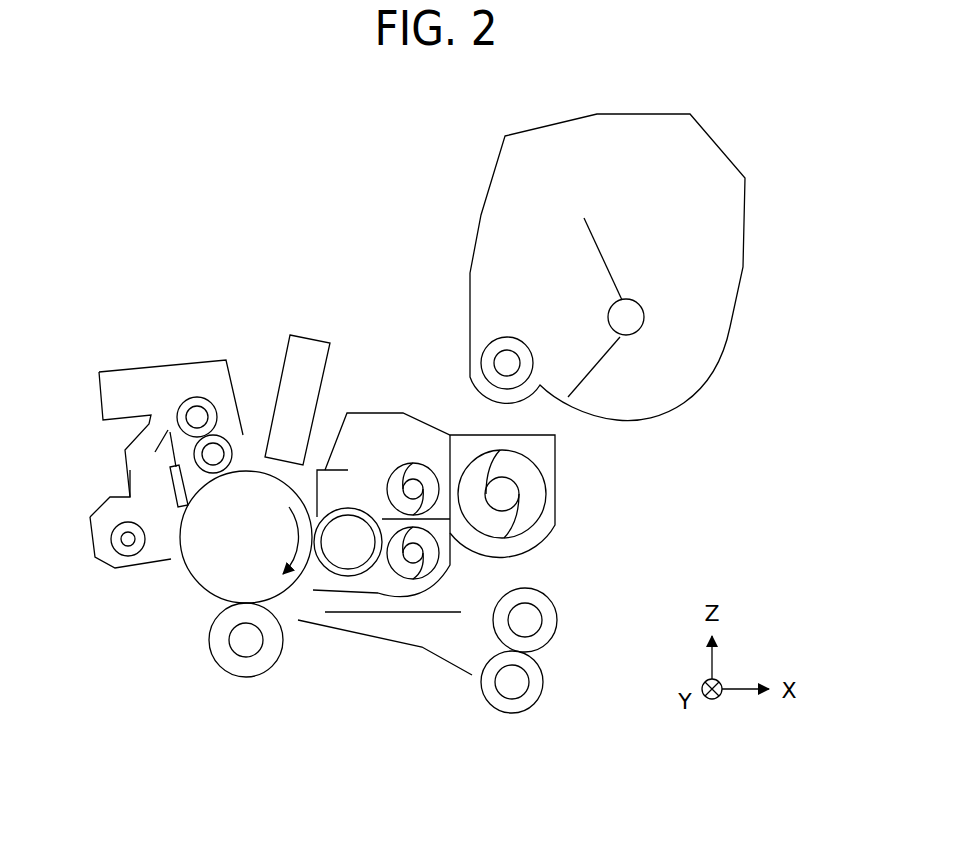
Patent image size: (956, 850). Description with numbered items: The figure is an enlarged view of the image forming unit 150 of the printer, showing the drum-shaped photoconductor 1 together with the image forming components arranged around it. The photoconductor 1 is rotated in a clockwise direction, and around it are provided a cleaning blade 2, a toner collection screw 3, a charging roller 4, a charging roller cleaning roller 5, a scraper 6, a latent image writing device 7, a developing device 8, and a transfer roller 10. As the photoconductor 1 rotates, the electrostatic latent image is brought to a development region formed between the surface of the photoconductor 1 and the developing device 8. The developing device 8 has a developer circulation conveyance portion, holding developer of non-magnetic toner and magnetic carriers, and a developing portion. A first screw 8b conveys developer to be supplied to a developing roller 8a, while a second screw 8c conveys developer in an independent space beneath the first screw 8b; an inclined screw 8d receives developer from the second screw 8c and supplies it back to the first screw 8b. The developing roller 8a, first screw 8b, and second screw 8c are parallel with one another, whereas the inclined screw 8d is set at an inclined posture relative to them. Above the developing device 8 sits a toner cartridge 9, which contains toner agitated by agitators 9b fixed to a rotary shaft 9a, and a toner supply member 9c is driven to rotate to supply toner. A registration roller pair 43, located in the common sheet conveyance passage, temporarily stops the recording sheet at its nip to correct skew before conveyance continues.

The image forming unit 150 is at (266, 201).
The photoconductor 1 is at (238, 545).
The cleaning blade 2 is at (177, 499).
The toner collection screw 3 is at (111, 540).
The charging roller 4 is at (229, 440).
The charging roller cleaning roller 5 is at (197, 396).
The scraper 6 is at (158, 435).
The latent image writing device 7 is at (307, 340).
The developing device 8 is at (558, 470).
The developing roller 8a is at (360, 508).
The first screw 8b is at (415, 463).
The second screw 8c is at (437, 568).
The inclined screw 8d is at (546, 513).
The toner cartridge 9 is at (742, 275).
The rotary shaft 9a is at (633, 298).
The agitator 9b is at (600, 247).
The toner supply member 9c is at (507, 337).
The transfer roller 10 is at (245, 678).
The registration roller pair 43 is at (491, 719).